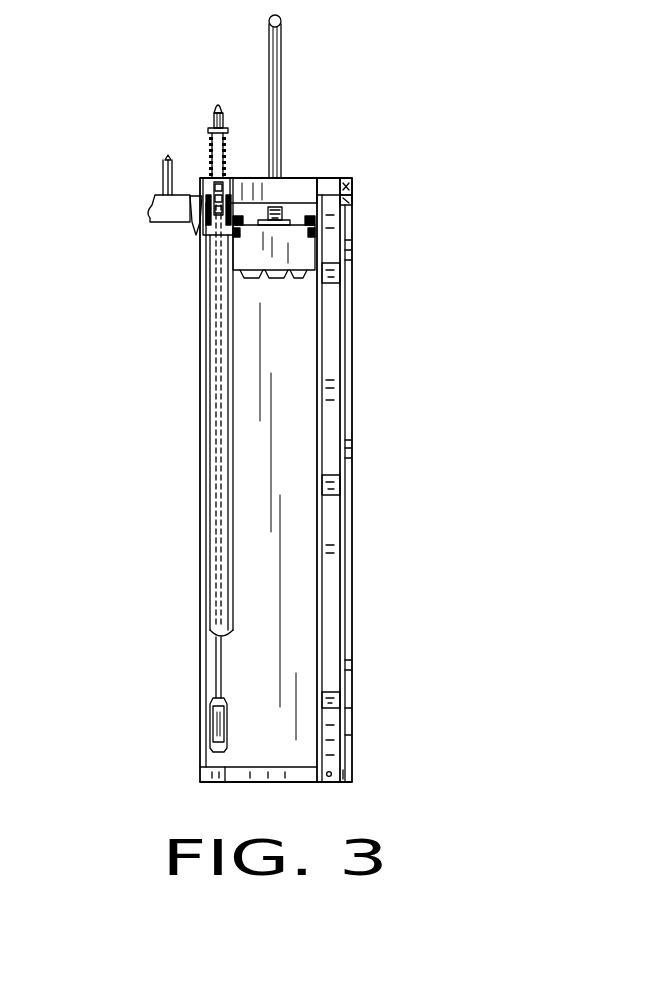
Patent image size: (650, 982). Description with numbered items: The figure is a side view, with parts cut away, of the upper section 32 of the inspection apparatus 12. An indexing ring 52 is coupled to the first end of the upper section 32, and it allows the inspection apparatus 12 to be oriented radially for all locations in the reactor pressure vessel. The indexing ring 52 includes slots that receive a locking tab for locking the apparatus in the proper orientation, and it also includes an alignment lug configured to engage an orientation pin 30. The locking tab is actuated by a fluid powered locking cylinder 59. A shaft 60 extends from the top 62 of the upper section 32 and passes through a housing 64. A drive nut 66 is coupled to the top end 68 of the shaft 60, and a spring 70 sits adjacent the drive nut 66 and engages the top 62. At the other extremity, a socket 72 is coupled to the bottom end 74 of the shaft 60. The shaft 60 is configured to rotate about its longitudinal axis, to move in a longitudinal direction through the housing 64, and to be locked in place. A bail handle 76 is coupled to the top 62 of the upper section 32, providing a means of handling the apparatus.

The inspection apparatus 12 is at (468, 150).
The orientation pin 30 is at (156, 187).
The upper section 32 is at (358, 427).
The indexing ring 52 is at (355, 197).
The fluid powered locking cylinder 59 is at (250, 230).
The shaft 60 is at (217, 663).
The top 62 is at (305, 178).
The housing 64 is at (205, 232).
The drive nut 66 is at (213, 113).
The top end 68 is at (208, 132).
The spring 70 is at (228, 158).
The socket 72 is at (210, 733).
The bottom end 74 is at (216, 693).
The bail handle 76 is at (283, 62).